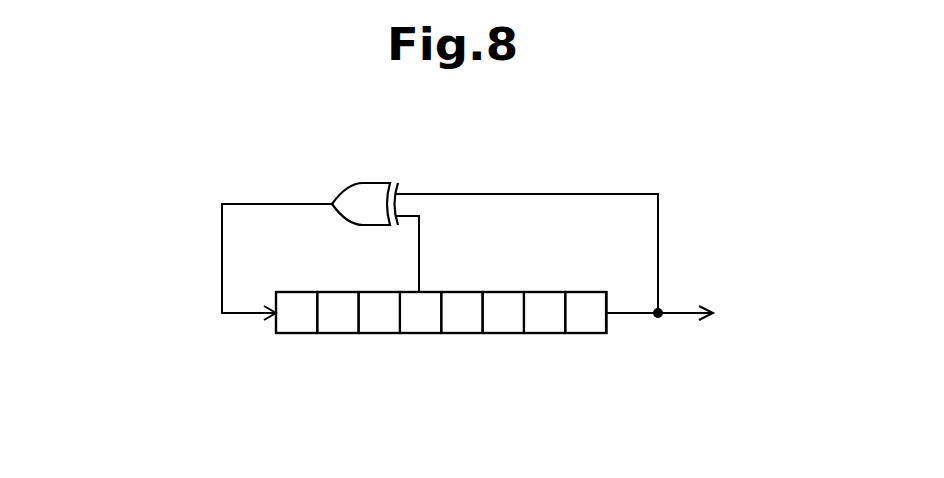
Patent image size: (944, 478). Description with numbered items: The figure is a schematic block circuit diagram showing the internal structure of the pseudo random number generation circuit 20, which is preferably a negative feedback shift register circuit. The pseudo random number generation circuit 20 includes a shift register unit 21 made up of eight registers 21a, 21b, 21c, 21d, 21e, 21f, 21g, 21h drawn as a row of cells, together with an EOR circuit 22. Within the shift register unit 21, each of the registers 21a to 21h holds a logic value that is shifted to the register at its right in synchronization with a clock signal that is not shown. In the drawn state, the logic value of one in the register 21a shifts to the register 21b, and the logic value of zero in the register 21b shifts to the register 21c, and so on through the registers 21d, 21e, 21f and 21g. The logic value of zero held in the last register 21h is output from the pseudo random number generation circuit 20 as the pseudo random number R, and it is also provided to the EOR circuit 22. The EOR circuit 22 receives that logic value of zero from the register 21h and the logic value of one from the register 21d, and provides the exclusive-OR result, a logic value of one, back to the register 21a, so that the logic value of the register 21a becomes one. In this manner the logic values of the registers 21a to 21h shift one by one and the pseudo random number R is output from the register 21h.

The pseudo random number generation circuit 20 is at (218, 177).
The shift register unit 21 is at (613, 405).
The register 21a is at (293, 334).
The register 21b is at (338, 334).
The register 21c is at (377, 334).
The register 21d is at (420, 334).
The register 21e is at (457, 334).
The register 21f is at (503, 334).
The register 21g is at (540, 334).
The register 21h is at (586, 334).
The EOR circuit 22 is at (371, 183).